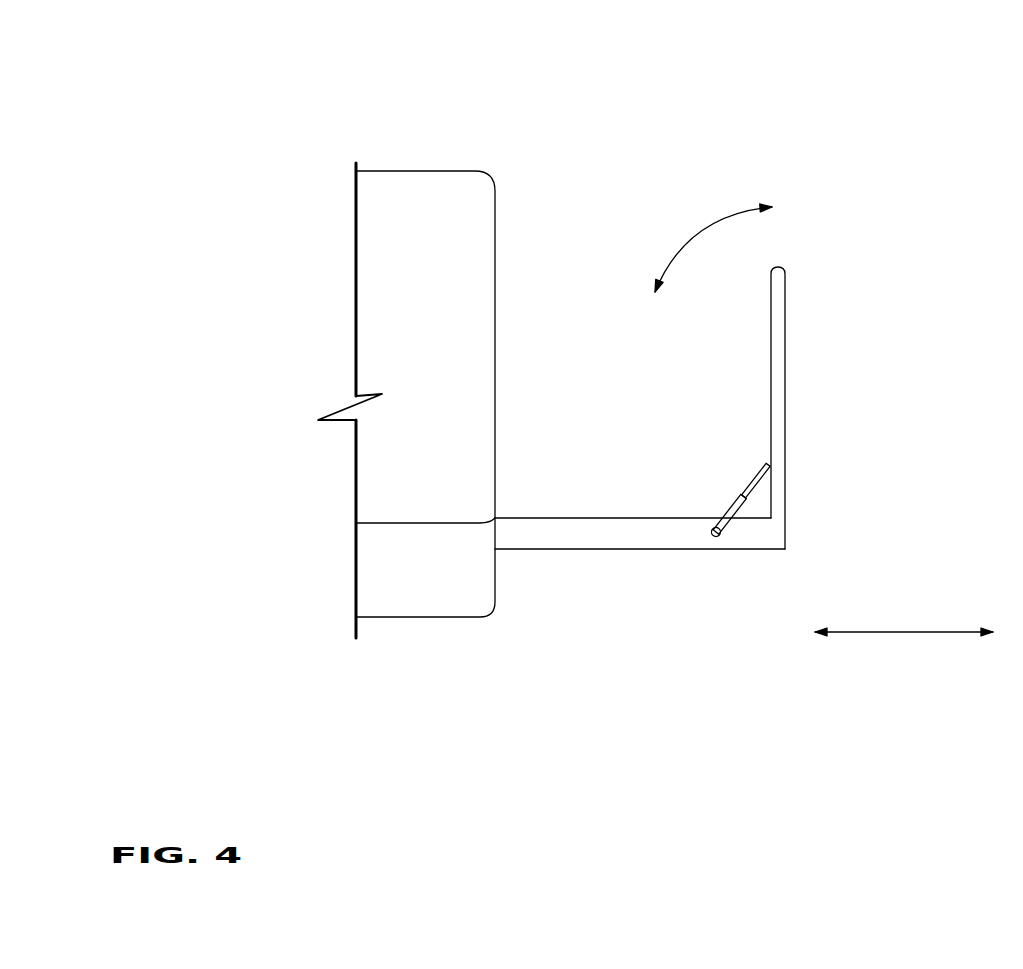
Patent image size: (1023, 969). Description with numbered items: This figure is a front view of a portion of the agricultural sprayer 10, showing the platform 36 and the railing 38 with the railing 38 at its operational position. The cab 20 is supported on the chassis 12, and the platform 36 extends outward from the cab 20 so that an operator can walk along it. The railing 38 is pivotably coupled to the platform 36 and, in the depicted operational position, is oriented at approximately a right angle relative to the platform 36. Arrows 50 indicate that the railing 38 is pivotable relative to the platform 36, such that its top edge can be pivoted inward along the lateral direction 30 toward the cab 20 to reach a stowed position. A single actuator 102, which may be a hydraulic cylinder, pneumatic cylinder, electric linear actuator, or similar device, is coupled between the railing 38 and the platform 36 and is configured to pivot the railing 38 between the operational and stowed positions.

The agricultural sprayer 10 is at (317, 117).
The chassis 12 is at (458, 617).
The cab 20 is at (495, 238).
The lateral direction 30 is at (890, 633).
The platform 36 is at (616, 549).
The railing 38 is at (785, 383).
The arrows 50 is at (700, 230).
The actuator 102 is at (733, 500).